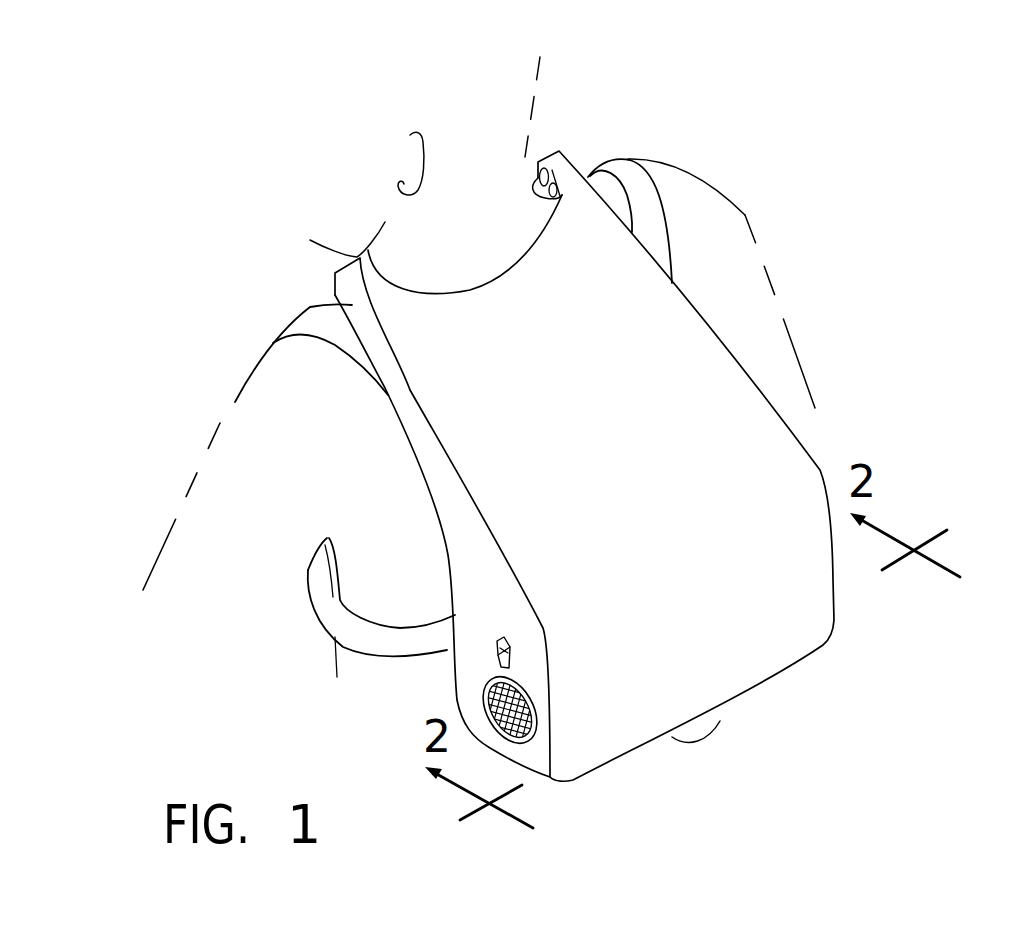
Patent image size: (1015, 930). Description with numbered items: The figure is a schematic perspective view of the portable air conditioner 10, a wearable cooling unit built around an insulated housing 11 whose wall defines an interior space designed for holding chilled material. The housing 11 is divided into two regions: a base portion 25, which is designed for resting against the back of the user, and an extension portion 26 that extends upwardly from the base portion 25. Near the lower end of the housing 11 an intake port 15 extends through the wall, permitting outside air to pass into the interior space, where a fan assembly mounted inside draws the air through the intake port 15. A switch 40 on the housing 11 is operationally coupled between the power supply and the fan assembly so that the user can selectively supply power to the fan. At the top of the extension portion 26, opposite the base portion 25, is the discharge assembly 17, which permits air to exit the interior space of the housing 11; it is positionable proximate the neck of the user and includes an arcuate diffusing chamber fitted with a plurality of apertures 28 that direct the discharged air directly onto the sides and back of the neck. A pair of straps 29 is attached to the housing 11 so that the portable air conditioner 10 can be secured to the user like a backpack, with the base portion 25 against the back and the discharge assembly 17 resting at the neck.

The portable air conditioner 10 is at (707, 111).
The insulated housing 11 is at (836, 640).
The intake port 15 is at (528, 741).
The discharge assembly 17 is at (421, 258).
The base portion 25 is at (700, 663).
The extension portion 26 is at (662, 340).
The apertures 28 is at (540, 187).
The straps 29 is at (317, 327).
The switch 40 is at (500, 661).